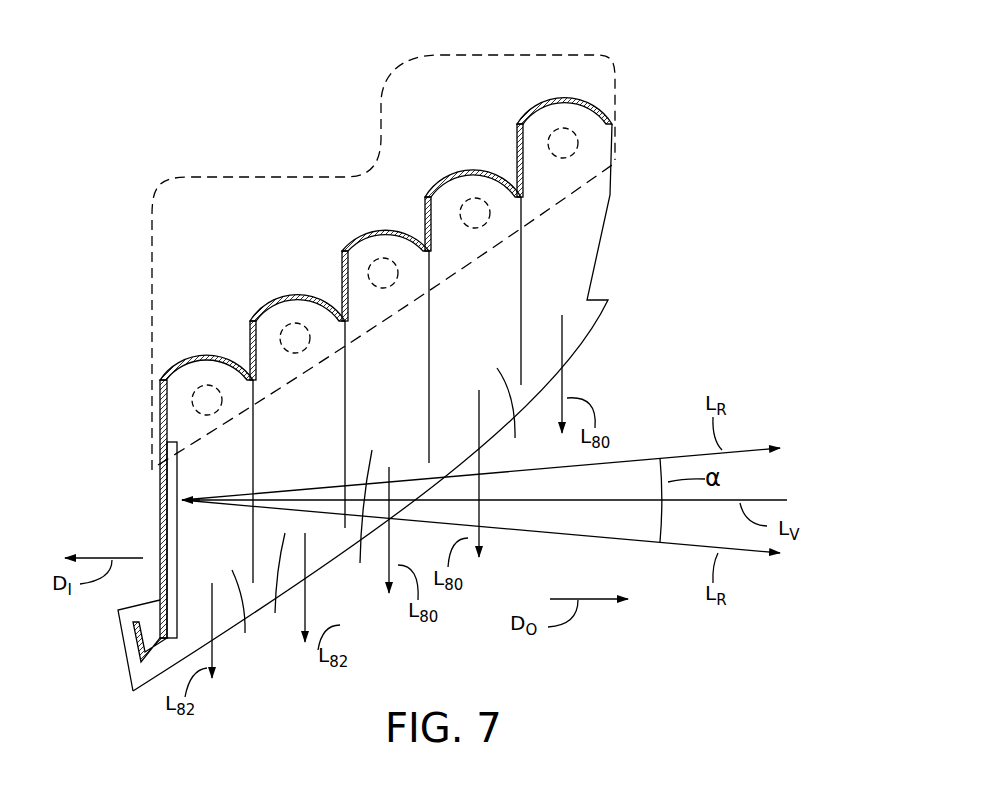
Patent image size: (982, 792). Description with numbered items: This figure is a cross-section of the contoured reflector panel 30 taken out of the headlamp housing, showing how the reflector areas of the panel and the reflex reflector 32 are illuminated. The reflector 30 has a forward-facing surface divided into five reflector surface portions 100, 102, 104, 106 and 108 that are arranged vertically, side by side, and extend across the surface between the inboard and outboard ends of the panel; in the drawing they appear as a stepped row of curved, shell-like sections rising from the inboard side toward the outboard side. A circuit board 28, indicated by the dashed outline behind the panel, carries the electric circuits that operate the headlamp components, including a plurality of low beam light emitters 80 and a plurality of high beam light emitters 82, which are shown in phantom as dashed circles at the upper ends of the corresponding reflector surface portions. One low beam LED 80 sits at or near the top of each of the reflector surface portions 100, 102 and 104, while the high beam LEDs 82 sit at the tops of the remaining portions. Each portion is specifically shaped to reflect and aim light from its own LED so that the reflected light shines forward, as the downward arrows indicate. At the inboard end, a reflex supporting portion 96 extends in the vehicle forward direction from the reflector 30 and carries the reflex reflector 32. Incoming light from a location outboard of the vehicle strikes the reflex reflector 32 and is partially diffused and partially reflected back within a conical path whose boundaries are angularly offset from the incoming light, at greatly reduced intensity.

The circuit board 28 is at (618, 58).
The contoured reflector panel 30 is at (195, 356).
The reflex reflector 32 is at (178, 533).
The low beam light emitter 80 is at (393, 285).
The high beam light emitter 82 is at (216, 411).
The reflex supporting portion 96 is at (158, 513).
The reflector surface portion 100 is at (562, 248).
The reflector surface portion 102 is at (516, 415).
The reflector surface portion 104 is at (362, 516).
The reflector surface portion 106 is at (277, 586).
The reflector surface portion 108 is at (243, 617).